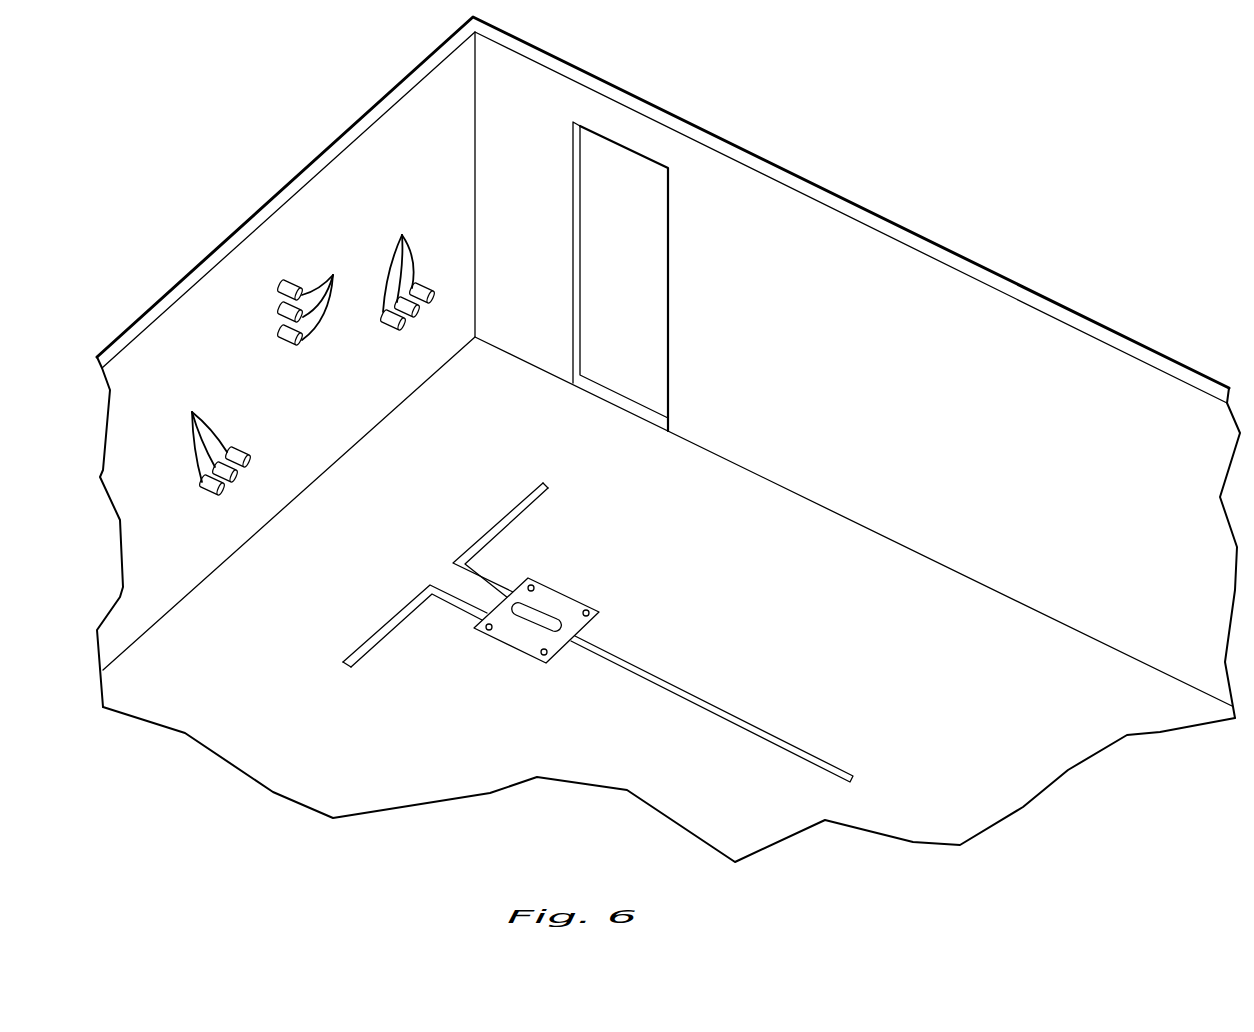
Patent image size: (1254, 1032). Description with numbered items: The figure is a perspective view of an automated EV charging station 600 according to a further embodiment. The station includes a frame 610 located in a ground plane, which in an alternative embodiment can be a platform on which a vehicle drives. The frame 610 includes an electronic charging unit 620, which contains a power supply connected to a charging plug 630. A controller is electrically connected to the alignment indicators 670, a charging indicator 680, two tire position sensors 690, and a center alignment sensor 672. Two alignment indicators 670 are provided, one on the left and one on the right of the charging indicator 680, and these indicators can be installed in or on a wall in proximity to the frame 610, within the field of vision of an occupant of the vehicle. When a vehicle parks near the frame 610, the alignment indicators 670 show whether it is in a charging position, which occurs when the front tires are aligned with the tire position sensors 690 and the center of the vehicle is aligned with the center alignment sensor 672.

The automated EV charging station 600 is at (985, 200).
The frame 610 is at (378, 715).
The electronic charging unit 620 is at (575, 600).
The charging plug 630 is at (530, 622).
The alignment indicator 670 is at (305, 353).
The center alignment sensor 672 is at (752, 718).
The charging indicator 680 is at (315, 297).
The tire position sensors 690 is at (512, 508).